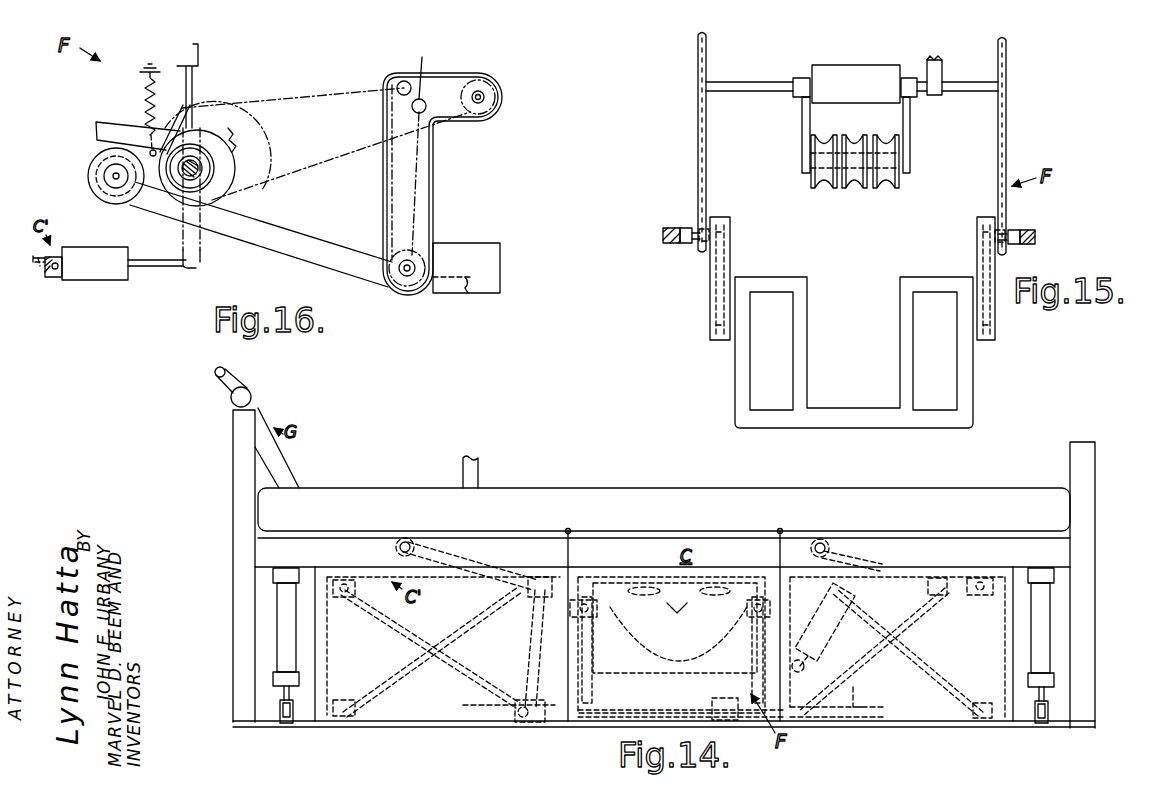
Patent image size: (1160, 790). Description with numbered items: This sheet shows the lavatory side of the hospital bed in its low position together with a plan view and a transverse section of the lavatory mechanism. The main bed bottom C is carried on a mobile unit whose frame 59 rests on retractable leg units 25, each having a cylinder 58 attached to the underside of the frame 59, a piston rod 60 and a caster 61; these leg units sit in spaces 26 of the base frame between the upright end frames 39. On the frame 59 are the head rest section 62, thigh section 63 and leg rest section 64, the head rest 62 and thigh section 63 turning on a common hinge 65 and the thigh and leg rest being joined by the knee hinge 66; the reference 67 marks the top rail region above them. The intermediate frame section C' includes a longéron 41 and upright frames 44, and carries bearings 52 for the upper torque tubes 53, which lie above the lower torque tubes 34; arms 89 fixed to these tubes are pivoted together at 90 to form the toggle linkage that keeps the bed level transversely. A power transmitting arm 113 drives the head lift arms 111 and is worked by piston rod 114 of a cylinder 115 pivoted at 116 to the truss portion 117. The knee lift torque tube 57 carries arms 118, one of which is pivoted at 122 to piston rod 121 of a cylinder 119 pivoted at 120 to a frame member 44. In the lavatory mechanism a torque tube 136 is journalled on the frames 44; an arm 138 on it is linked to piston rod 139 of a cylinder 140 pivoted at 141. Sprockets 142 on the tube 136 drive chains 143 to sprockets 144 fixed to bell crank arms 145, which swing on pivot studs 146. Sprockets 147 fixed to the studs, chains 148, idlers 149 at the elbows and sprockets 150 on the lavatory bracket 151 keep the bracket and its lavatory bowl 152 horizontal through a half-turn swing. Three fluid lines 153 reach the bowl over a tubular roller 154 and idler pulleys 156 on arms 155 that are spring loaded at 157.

In FIG. 14, the retractable leg units 25 is at (277, 619).
In FIG. 14, the spaces 26 is at (263, 651).
In FIG. 14, the torque tubes 34 is at (343, 717).
In FIG. 14, the upright end frames 39 is at (327, 648).
In FIG. 14, the longéron 41 is at (477, 578).
In FIG. 15, the upright frames 44 is at (663, 233).
In FIG. 14, the upright frames 44 is at (534, 677).
In FIG. 14, the bearings 52 is at (323, 572).
In FIG. 14, the torque tubes 53 is at (370, 598).
In FIG. 14, the torque tube 57 is at (947, 578).
In FIG. 14, the cylinder 58 is at (278, 634).
In FIG. 14, the frame 59 is at (1060, 556).
In FIG. 14, the piston rod 60 is at (285, 693).
In FIG. 14, the caster 61 is at (286, 727).
In FIG. 14, the head rest section 62 is at (406, 539).
In FIG. 14, the thigh section 63 is at (700, 530).
In FIG. 14, the leg rest section 64 is at (943, 537).
In FIG. 14, the hinge 65 is at (571, 530).
In FIG. 14, the knee hinge 66 is at (782, 530).
In FIG. 14, the top rail 67 is at (368, 488).
In FIG. 14, the arms 89 is at (386, 680).
In FIG. 14, the pivot 90 is at (452, 633).
In FIG. 14, the arms 111 is at (466, 562).
In FIG. 14, the power transmitting arm 113 is at (533, 644).
In FIG. 14, the piston rod 114 is at (521, 720).
In FIG. 14, the cylinder 115 is at (600, 724).
In FIG. 14, the pivot 116 is at (738, 699).
In FIG. 16, the truss portion 117 is at (48, 251).
In FIG. 14, the truss portion 117 is at (860, 703).
In FIG. 14, the arms 118 is at (849, 548).
In FIG. 14, the cylinder 119 is at (826, 648).
In FIG. 14, the pivot 120 is at (801, 674).
In FIG. 14, the piston rod 121 is at (841, 622).
In FIG. 14, the pivot 122 is at (863, 564).
In FIG. 16, the torque tube 136 is at (196, 176).
In FIG. 15, the torque tube 136 is at (751, 91).
In FIG. 16, the arm 138 is at (198, 264).
In FIG. 15, the arm 138 is at (940, 95).
In FIG. 16, the piston rod 139 is at (153, 267).
In FIG. 16, the cylinder 140 is at (93, 281).
In FIG. 16, the pivot 141 is at (53, 279).
In FIG. 16, the sprockets 142 is at (230, 130).
In FIG. 15, the sprockets 142 is at (707, 35).
In FIG. 16, the chains 143 is at (307, 97).
In FIG. 15, the chains 143 is at (698, 150).
In FIG. 16, the sprockets 144 is at (487, 78).
In FIG. 15, the sprockets 144 is at (702, 251).
In FIG. 16, the bell crank arms 145 is at (435, 152).
In FIG. 15, the bell crank arms 145 is at (713, 330).
In FIG. 14, the bell crank arms 145 is at (595, 685).
In FIG. 16, the pivot studs 146 is at (494, 96).
In FIG. 15, the pivot studs 146 is at (699, 226).
In FIG. 14, the pivot studs 146 is at (601, 617).
In FIG. 16, the sprockets 147 is at (487, 112).
In FIG. 15, the sprockets 147 is at (720, 218).
In FIG. 16, the chains 148 is at (418, 200).
In FIG. 15, the chains 148 is at (715, 303).
In FIG. 16, the idlers 149 is at (410, 62).
In FIG. 16, the sprockets 150 is at (394, 262).
In FIG. 15, the sprockets 150 is at (720, 347).
In FIG. 16, the lavatory bracket 151 is at (501, 283).
In FIG. 15, the lavatory bracket 151 is at (872, 388).
In FIG. 16, the lavatory bowl 152 is at (499, 243).
In FIG. 14, the lavatory bowl 152 is at (646, 655).
In FIG. 16, the fluid lines 153 is at (276, 250).
In FIG. 16, the tubular roller 154 is at (216, 167).
In FIG. 15, the tubular roller 154 is at (866, 70).
In FIG. 16, the arms 155 is at (192, 110).
In FIG. 15, the arms 155 is at (803, 151).
In FIG. 16, the idler pulleys 156 is at (98, 172).
In FIG. 15, the idler pulleys 156 is at (820, 184).
In FIG. 16, the spring 157 is at (147, 92).